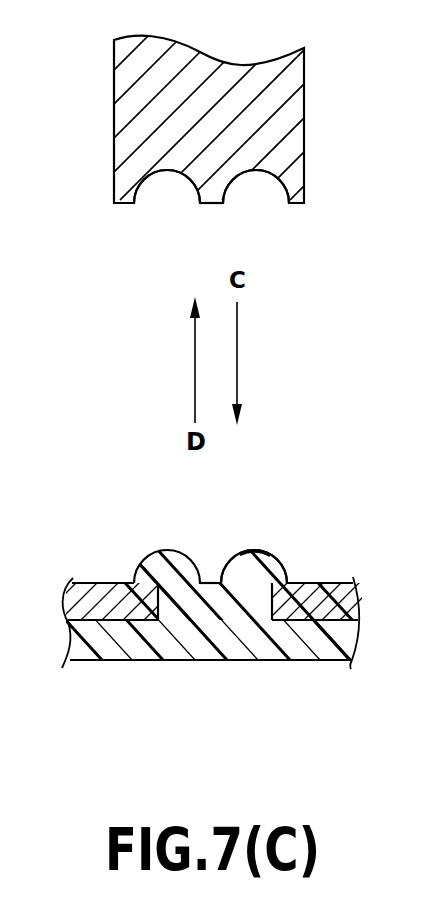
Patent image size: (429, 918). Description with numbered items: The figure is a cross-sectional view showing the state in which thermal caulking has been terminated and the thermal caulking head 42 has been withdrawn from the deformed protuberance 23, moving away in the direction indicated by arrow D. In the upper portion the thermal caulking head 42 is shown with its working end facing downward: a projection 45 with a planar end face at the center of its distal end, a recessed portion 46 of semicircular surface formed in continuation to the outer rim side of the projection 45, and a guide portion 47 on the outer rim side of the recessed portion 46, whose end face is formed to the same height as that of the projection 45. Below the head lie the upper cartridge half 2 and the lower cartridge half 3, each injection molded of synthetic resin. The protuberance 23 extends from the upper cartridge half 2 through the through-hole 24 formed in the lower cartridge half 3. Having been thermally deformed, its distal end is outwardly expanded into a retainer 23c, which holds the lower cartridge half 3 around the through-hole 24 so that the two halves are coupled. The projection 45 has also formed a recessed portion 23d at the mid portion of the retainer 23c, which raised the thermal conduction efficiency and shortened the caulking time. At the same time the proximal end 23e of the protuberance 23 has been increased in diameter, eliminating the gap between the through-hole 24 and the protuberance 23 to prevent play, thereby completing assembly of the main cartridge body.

The thermal caulking head 42 is at (137, 97).
The projection 45 is at (209, 205).
The recessed portion 46 is at (158, 183).
The guide portion 47 is at (300, 206).
The upper cartridge half 2 is at (348, 648).
The lower cartridge half 3 is at (333, 603).
The protuberance 23 is at (228, 605).
The retainer 23c is at (254, 558).
The recessed portion 23d is at (214, 583).
The proximal end 23e is at (183, 607).
The through-hole 24 is at (268, 556).